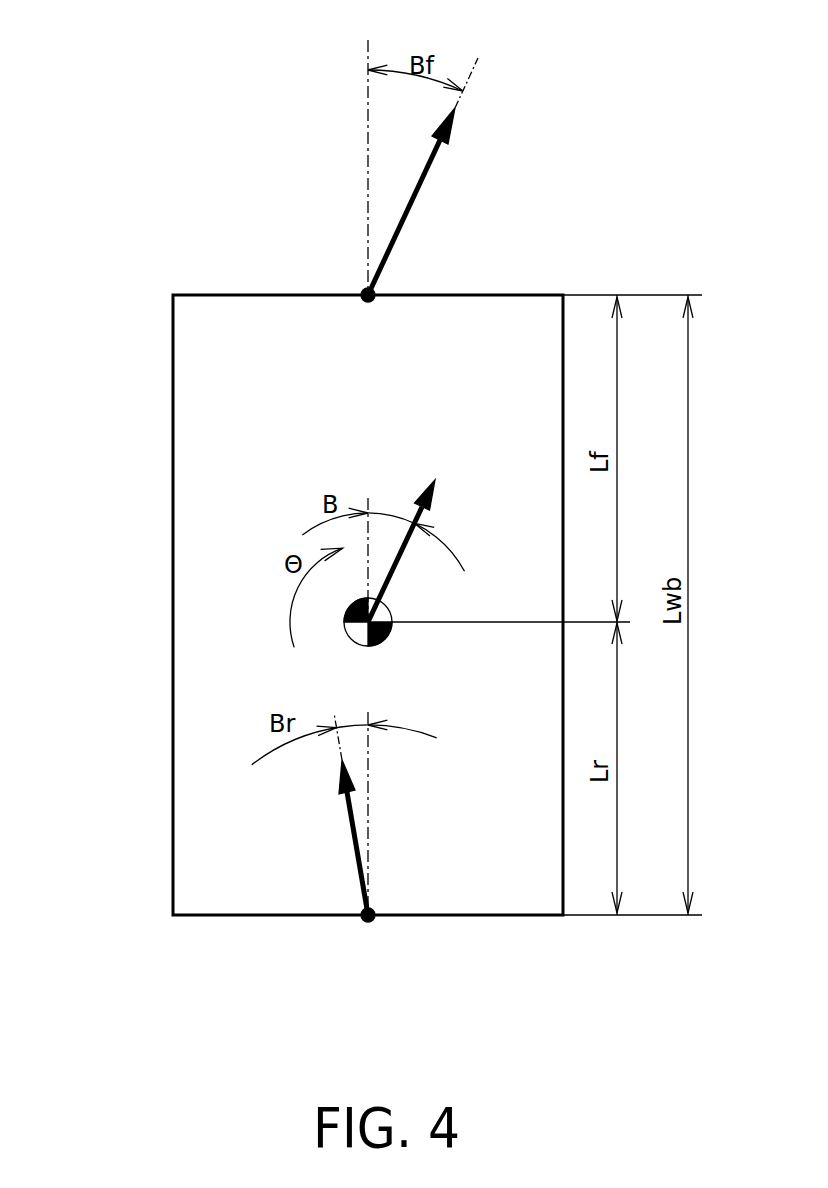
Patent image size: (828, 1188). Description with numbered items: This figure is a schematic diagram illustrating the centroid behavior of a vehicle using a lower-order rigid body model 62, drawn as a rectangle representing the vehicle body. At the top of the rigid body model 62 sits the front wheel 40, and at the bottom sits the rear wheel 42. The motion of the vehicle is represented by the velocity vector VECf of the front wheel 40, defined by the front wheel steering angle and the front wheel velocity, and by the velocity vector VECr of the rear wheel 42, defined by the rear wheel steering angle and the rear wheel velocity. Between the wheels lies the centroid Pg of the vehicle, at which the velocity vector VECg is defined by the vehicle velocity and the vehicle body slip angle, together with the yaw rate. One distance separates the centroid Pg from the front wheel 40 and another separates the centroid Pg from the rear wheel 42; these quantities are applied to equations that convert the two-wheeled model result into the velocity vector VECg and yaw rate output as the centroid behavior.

The front wheel 40 is at (366, 291).
The rear wheel 42 is at (367, 922).
The rigid body model 62 is at (162, 623).
The centroid Pg is at (392, 637).
The velocity vector of the front wheel VECf is at (433, 163).
The velocity vector of the rear wheel VECr is at (338, 798).
The velocity vector of the centroid VECg is at (433, 597).